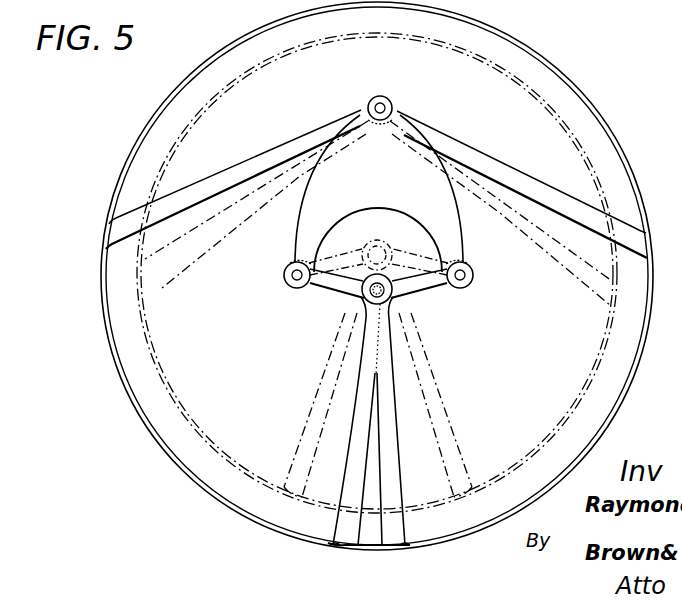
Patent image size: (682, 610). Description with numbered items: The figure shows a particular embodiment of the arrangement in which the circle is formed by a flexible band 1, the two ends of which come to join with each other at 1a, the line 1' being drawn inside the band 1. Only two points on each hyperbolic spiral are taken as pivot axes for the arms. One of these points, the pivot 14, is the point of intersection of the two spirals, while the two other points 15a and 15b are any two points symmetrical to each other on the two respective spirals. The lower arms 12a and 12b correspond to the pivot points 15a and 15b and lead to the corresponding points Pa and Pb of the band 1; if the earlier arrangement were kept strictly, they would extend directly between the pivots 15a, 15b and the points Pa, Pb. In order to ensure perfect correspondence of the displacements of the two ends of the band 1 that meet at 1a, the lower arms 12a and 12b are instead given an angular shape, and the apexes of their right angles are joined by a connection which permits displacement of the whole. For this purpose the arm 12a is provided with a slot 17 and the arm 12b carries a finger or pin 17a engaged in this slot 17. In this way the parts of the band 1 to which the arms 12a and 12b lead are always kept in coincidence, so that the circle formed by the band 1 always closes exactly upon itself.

The band 1 is at (385, 276).
The rim inner phantom circle 1' is at (404, 273).
The junction of band ends 1a is at (329, 542).
The pivot point 14 is at (386, 104).
The arm 12a is at (492, 170).
The arm 12b is at (247, 162).
The pivot point 15a is at (474, 275).
The pivot point 15b is at (283, 279).
The slot 17 is at (397, 297).
The finger or pin 17a is at (355, 297).
The point of the band Pa is at (406, 548).
The point of the band Pb is at (337, 545).